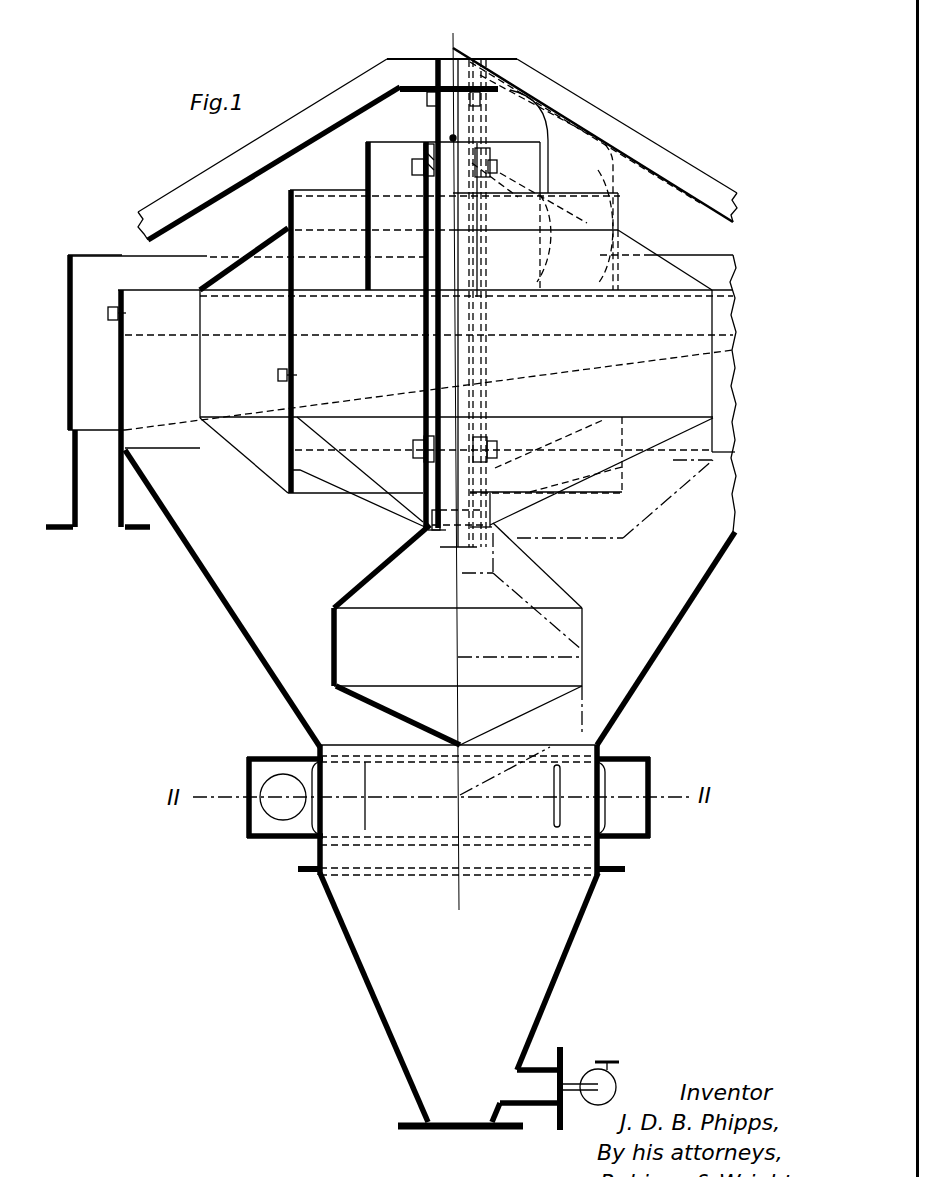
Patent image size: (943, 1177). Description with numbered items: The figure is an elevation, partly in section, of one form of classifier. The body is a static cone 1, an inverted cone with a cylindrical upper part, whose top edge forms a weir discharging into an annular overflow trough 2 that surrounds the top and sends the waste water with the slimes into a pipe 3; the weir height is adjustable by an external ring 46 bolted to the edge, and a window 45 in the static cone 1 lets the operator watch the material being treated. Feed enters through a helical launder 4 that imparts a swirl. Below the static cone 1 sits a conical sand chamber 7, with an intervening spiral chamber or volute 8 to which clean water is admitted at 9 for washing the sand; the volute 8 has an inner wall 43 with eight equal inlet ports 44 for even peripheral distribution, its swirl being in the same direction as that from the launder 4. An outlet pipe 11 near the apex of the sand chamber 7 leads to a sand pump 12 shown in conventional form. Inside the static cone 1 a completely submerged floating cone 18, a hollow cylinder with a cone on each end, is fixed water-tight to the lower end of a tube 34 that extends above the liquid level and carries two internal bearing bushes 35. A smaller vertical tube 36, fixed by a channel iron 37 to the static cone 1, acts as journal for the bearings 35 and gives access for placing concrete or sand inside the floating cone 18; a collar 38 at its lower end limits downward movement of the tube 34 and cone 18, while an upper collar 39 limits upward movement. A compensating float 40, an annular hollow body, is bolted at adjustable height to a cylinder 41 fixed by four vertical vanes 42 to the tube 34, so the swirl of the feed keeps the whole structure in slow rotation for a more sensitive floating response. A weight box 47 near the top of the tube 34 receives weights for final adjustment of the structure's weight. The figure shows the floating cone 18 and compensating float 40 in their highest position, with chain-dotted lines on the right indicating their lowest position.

The static cone 1 is at (217, 607).
The annular overflow trough 2 is at (96, 342).
The pipe 3 is at (108, 520).
The helical launder 4 is at (598, 166).
The conical sand chamber 7 is at (373, 991).
The spiral chamber or volute 8 is at (263, 820).
The clean water admission 9 is at (277, 785).
The outlet pipe 11 is at (560, 1080).
The sand pump 12 is at (611, 1087).
The floating cone 18 is at (353, 633).
The tube 34 is at (425, 357).
The internal bearing bushes 35 is at (423, 173).
The smaller vertical tube 36 is at (435, 123).
The channel iron 37 is at (350, 95).
The collar 38 is at (420, 527).
The upper collar 39 is at (479, 147).
The compensating float 40 is at (275, 467).
The cylinder 41 is at (298, 348).
The vanes 42 is at (390, 503).
The inner wall 43 is at (323, 802).
The inlet ports 44 is at (367, 802).
The window 45 is at (657, 665).
The external ring 46 is at (118, 293).
The weight box 47 is at (367, 211).